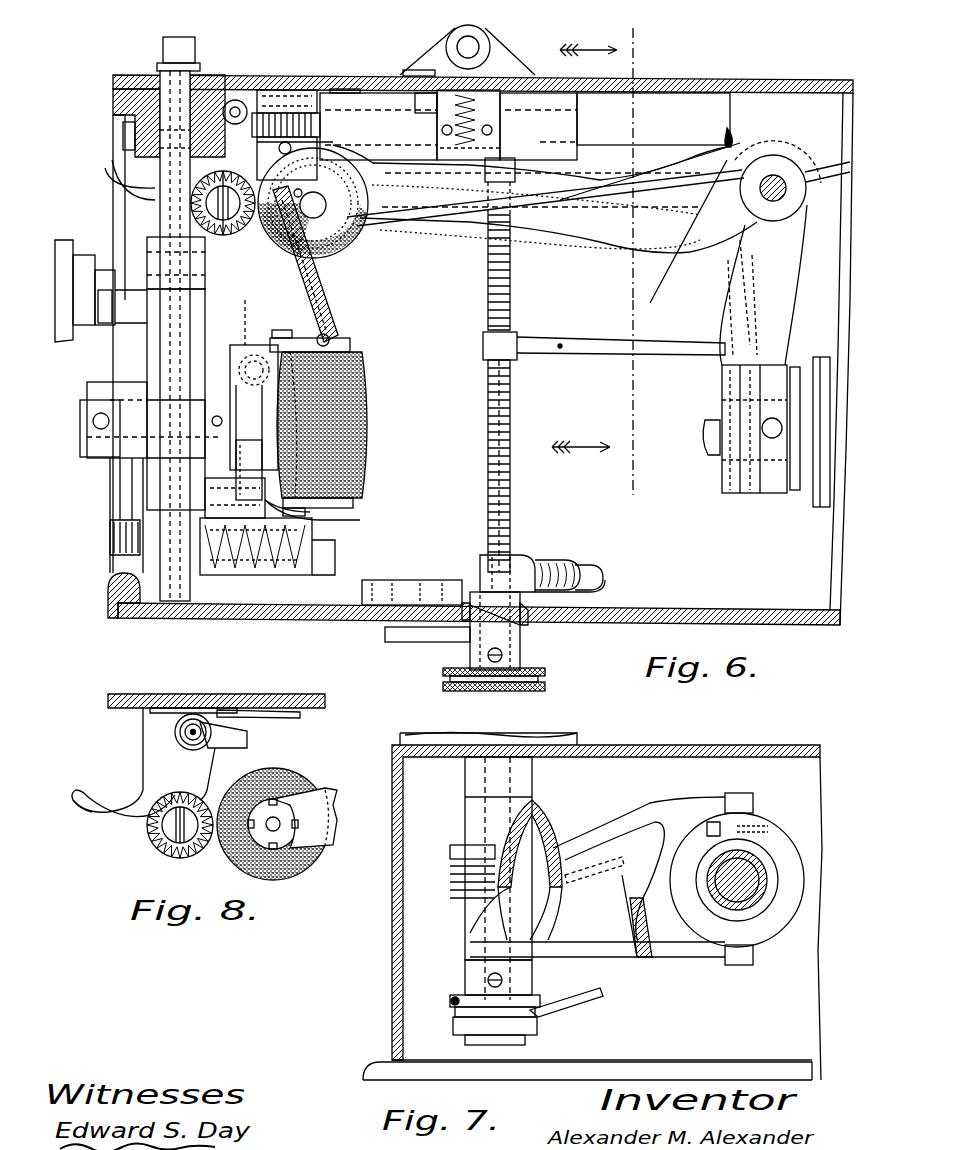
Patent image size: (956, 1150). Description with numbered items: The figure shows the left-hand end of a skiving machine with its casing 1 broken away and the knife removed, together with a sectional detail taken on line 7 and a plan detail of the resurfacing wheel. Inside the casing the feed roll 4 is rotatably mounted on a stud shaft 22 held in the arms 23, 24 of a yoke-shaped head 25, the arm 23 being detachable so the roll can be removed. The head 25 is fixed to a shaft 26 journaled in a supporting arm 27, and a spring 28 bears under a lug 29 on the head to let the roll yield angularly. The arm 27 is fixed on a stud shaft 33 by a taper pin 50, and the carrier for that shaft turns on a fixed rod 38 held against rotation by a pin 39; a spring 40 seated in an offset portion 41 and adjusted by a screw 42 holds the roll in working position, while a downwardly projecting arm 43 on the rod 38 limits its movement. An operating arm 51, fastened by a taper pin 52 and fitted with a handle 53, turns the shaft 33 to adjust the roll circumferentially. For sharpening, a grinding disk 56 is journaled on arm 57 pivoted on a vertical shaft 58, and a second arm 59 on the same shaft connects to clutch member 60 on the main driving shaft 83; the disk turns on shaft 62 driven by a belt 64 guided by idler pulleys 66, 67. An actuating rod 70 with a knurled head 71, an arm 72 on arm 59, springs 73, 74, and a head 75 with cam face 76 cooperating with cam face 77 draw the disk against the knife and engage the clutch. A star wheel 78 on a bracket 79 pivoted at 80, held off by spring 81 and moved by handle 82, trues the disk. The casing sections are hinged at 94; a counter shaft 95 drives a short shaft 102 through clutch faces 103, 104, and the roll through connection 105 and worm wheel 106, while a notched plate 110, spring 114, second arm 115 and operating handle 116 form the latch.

In FIG. 6, the casing 1 is at (752, 80).
In FIG. 7, the casing 1 is at (392, 937).
In FIG. 6, the feed roll 4 is at (362, 485).
In FIG. 6, the section line 7— 7 is at (595, 253).
In FIG. 6, the stud shaft 22 is at (360, 390).
In FIG. 6, the arm 23 is at (280, 338).
In FIG. 6, the arm 24 is at (325, 522).
In FIG. 6, the yoke-shaped head 25 is at (251, 470).
In FIG. 6, the shaft 26 is at (230, 560).
In FIG. 6, the supporting arm 27 is at (190, 450).
In FIG. 6, the spring 28 is at (234, 316).
In FIG. 6, the laterally projecting lug 29 is at (232, 350).
In FIG. 6, the stud shaft 33 is at (110, 462).
In FIG. 6, the fixed rod 38 is at (160, 212).
In FIG. 6, the pin 39 is at (112, 166).
In FIG. 6, the spring 40 is at (280, 560).
In FIG. 6, the offset portion 41 is at (312, 560).
In FIG. 6, the screw 42 is at (110, 550).
In FIG. 6, the downwardly projecting arm 43 is at (148, 246).
In FIG. 6, the taper pin 50 is at (215, 416).
In FIG. 6, the operating arm 51 is at (108, 350).
In FIG. 6, the taper pin 52 is at (92, 430).
In FIG. 6, the handle 53 is at (75, 335).
In FIG. 6, the grinding disk 56 is at (355, 243).
In FIG. 8, the grinding disk 56 is at (292, 870).
In FIG. 6, the arm 57 is at (462, 225).
In FIG. 8, the arm 57 is at (330, 797).
In FIG. 7, the arm 57 is at (550, 822).
In FIG. 6, the vertical shaft 58 is at (778, 180).
In FIG. 7, the vertical shaft 58 is at (505, 780).
In FIG. 6, the second arm 59 is at (783, 295).
In FIG. 7, the second arm 59 is at (640, 812).
In FIG. 6, the clutch member 60 is at (775, 490).
In FIG. 6, the shaft 62 is at (338, 240).
In FIG. 6, the belt 64 is at (415, 232).
In FIG. 7, the belt 64 is at (572, 1003).
In FIG. 6, the idler pulley 66 is at (752, 145).
In FIG. 7, the idler pulley 66 is at (452, 872).
In FIG. 7, the idler pulley 67 is at (455, 1008).
In FIG. 6, the actuating rod 70 is at (486, 335).
In FIG. 6, the knurled head 71 is at (545, 672).
In FIG. 6, the arm 72 is at (562, 340).
In FIG. 6, the spring 73 is at (512, 265).
In FIG. 6, the spring 74 is at (488, 425).
In FIG. 6, the head 75 is at (480, 565).
In FIG. 6, the cam face 76 is at (592, 590).
In FIG. 6, the cam face 77 is at (470, 608).
In FIG. 6, the wheel 78 is at (232, 236).
In FIG. 8, the wheel 78 is at (185, 845).
In FIG. 8, the bracket 79 is at (143, 756).
In FIG. 8, the pivot 80 is at (195, 728).
In FIG. 8, the spring 81 is at (255, 712).
In FIG. 8, the handle 82 is at (90, 812).
In FIG. 6, the main driving shaft 83 is at (708, 450).
In FIG. 7, the main driving shaft 83 is at (745, 895).
In FIG. 6, the hinge 94 is at (470, 45).
In FIG. 6, the counter shaft 95 is at (680, 125).
In FIG. 6, the short shaft 102 is at (395, 93).
In FIG. 6, the clutch face 103 is at (440, 60).
In FIG. 6, the clutch face 104 is at (560, 50).
In FIG. 6, the universal joint and shaft connection 105 is at (330, 320).
In FIG. 6, the worm wheel 106 is at (283, 90).
In FIG. 6, the notched plate 110 is at (392, 580).
In FIG. 6, the spring 114 is at (592, 548).
In FIG. 6, the second arm 115 is at (598, 572).
In FIG. 6, the operating handle 116 is at (392, 640).